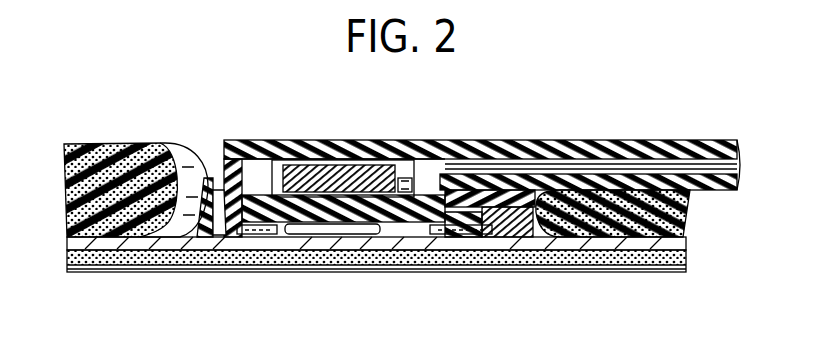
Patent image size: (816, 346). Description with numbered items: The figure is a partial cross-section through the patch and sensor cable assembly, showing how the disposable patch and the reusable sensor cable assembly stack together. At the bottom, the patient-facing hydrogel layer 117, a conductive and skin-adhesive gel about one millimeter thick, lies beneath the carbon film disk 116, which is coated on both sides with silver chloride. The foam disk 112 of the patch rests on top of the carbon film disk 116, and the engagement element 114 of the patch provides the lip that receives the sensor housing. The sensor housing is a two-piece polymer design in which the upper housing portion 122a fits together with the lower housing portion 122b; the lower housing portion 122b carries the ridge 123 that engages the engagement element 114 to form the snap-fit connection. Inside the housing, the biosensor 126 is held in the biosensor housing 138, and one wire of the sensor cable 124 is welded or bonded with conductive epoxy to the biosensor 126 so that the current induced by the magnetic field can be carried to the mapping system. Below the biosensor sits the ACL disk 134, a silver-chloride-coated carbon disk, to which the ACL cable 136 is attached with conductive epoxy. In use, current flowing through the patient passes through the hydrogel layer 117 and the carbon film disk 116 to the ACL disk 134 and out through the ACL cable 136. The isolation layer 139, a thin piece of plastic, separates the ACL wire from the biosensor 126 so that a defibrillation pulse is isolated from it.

The foam disk 112 is at (121, 146).
The engagement element 114 is at (221, 188).
The carbon film disk 116 is at (680, 246).
The hydrogel layer 117 is at (687, 263).
The upper housing portion 122a is at (655, 140).
The lower housing portion 122b is at (257, 236).
The ridge 123 is at (222, 235).
The sensor cable 124 is at (683, 173).
The biosensor 126 is at (348, 164).
The ACL disk 134 is at (337, 236).
The ACL cable 136 is at (422, 238).
The biosensor housing 138 is at (396, 160).
The isolation layer 139 is at (447, 202).